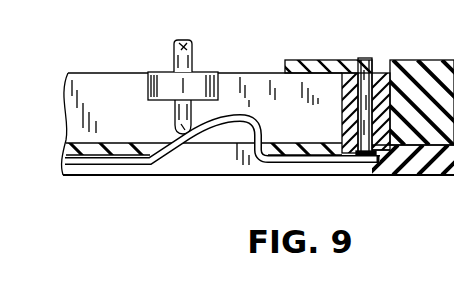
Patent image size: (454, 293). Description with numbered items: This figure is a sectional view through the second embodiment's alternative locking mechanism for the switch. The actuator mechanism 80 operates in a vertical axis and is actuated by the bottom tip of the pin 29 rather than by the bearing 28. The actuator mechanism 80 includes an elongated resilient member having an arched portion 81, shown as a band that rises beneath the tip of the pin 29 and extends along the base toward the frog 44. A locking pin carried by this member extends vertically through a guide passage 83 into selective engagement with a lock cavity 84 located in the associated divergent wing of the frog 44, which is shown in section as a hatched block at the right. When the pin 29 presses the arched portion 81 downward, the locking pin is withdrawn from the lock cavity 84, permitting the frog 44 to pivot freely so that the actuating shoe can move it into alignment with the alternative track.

The bearing 28 is at (157, 73).
The pin 29 is at (170, 128).
The frog 44 is at (411, 70).
The actuator mechanism 80 is at (254, 42).
The arched portion 81 is at (200, 142).
The guide passage 83 is at (342, 115).
The lock cavity 84 is at (362, 68).